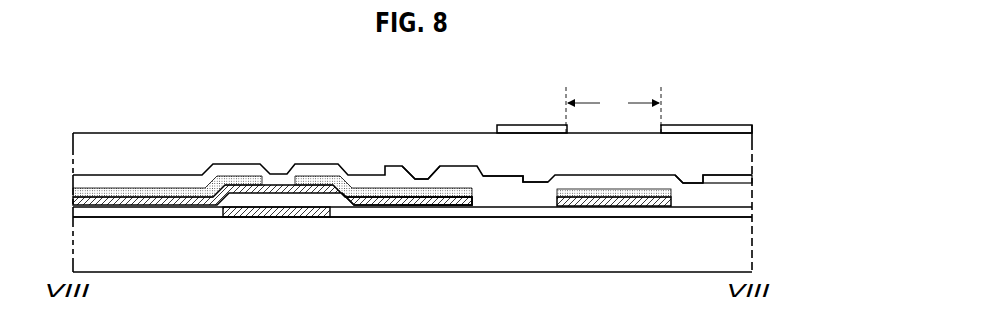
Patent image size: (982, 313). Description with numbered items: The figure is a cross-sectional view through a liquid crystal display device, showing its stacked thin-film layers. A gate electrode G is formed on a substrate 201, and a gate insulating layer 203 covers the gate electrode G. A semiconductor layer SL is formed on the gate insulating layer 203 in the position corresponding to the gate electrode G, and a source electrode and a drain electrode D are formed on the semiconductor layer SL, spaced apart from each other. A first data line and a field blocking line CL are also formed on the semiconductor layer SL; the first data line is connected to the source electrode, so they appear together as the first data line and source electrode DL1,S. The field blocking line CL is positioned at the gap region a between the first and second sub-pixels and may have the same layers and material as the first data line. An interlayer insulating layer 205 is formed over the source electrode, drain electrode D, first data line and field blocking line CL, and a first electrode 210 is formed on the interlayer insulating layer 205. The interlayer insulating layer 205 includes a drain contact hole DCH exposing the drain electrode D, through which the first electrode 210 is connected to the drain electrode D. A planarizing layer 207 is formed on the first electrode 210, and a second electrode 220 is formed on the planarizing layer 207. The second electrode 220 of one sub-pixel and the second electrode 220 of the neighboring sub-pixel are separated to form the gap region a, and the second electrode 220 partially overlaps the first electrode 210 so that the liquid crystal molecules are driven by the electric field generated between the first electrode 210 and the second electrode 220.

The substrate 201 is at (745, 268).
The gate insulating layer 203 is at (737, 212).
The interlayer insulating layer 205 is at (740, 192).
The planarizing layer 207 is at (737, 153).
The first electrode 210 is at (492, 180).
The second electrode 220 is at (512, 128).
The gate electrode G is at (275, 212).
The drain electrode D is at (397, 205).
The semiconductor layer SL is at (427, 205).
The field blocking line CL is at (602, 206).
The first data line and source electrode DL1,S is at (140, 207).
The drain contact hole DCH is at (421, 172).
The gap region a is at (613, 110).